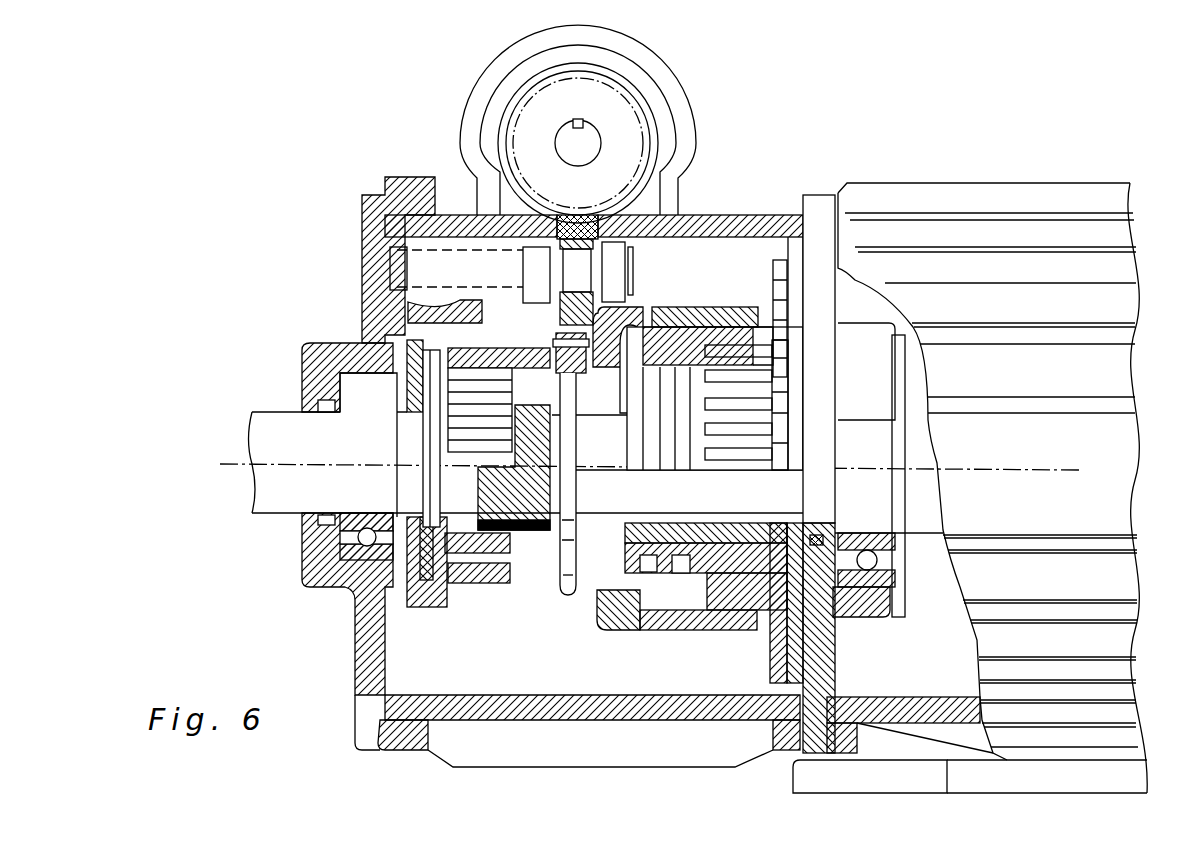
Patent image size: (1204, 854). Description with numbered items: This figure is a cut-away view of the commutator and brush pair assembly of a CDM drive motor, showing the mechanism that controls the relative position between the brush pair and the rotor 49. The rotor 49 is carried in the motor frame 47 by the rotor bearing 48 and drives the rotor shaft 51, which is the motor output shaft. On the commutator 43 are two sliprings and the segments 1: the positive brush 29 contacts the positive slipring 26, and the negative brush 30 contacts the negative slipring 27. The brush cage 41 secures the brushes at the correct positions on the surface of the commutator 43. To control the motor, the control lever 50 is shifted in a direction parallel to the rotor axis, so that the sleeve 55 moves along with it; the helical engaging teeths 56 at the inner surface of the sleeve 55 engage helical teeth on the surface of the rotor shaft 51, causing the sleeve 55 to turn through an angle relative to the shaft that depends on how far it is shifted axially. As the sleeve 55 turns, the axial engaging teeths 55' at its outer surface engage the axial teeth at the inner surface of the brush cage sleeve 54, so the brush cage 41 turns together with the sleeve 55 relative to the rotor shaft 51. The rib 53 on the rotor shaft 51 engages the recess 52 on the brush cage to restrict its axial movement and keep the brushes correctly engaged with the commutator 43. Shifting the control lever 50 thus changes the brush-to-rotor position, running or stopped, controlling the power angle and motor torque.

The segments 1 is at (745, 458).
The positive slipring 26 is at (650, 377).
The negative slipring 27 is at (683, 383).
The positive brush 29 is at (733, 378).
The negative brush 30 is at (720, 600).
The brush cage 41 is at (655, 383).
The commutator 43 is at (633, 430).
The motor frame 47 is at (822, 210).
The rotor bearing 48 is at (862, 588).
The rotor 49 is at (925, 600).
The control lever 50 is at (418, 297).
The rotor shaft 51 is at (597, 510).
The recess 52 is at (580, 503).
The rib 53 is at (558, 588).
The brush cage sleeve 54 is at (548, 355).
The sleeve 55 is at (375, 459).
The axial engaging teeths 55' is at (497, 453).
The helical engaging teeths 56 is at (527, 410).